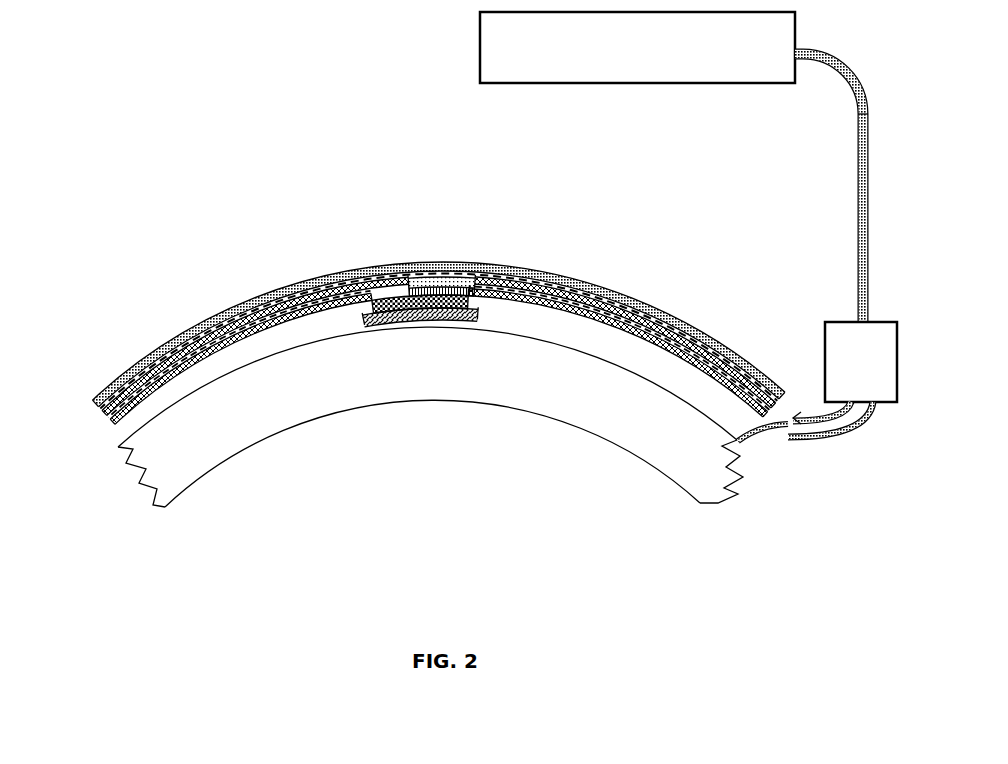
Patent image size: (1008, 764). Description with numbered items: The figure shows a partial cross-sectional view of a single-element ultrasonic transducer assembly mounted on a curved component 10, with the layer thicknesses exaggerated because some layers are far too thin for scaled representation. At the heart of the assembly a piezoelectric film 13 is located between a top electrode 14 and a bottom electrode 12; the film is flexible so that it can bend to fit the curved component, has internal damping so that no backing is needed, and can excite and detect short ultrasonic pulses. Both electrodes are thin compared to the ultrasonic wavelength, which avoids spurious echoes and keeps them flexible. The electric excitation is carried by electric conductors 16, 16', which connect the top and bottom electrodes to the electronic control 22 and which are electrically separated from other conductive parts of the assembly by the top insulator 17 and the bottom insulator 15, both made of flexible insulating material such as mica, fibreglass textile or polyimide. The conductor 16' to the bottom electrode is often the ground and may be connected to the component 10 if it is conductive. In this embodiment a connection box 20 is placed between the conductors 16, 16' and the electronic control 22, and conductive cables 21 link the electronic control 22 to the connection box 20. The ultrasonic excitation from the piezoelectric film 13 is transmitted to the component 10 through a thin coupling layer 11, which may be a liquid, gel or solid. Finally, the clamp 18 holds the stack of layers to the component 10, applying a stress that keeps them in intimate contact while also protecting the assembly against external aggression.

The component 10 is at (478, 403).
The coupling layer 11 is at (478, 316).
The bottom electrode 12 is at (481, 276).
The piezoelectric film 13 is at (373, 303).
The top electrode 14 is at (368, 277).
The bottom insulator 15 is at (108, 424).
The electric conductor 16 is at (473, 490).
The electric conductor 16' is at (805, 439).
The top insulator 17 is at (104, 412).
The clamp 18 is at (96, 396).
The connection box 20 is at (837, 333).
The conductive cables 21 is at (857, 208).
The electronic control 22 is at (622, 72).